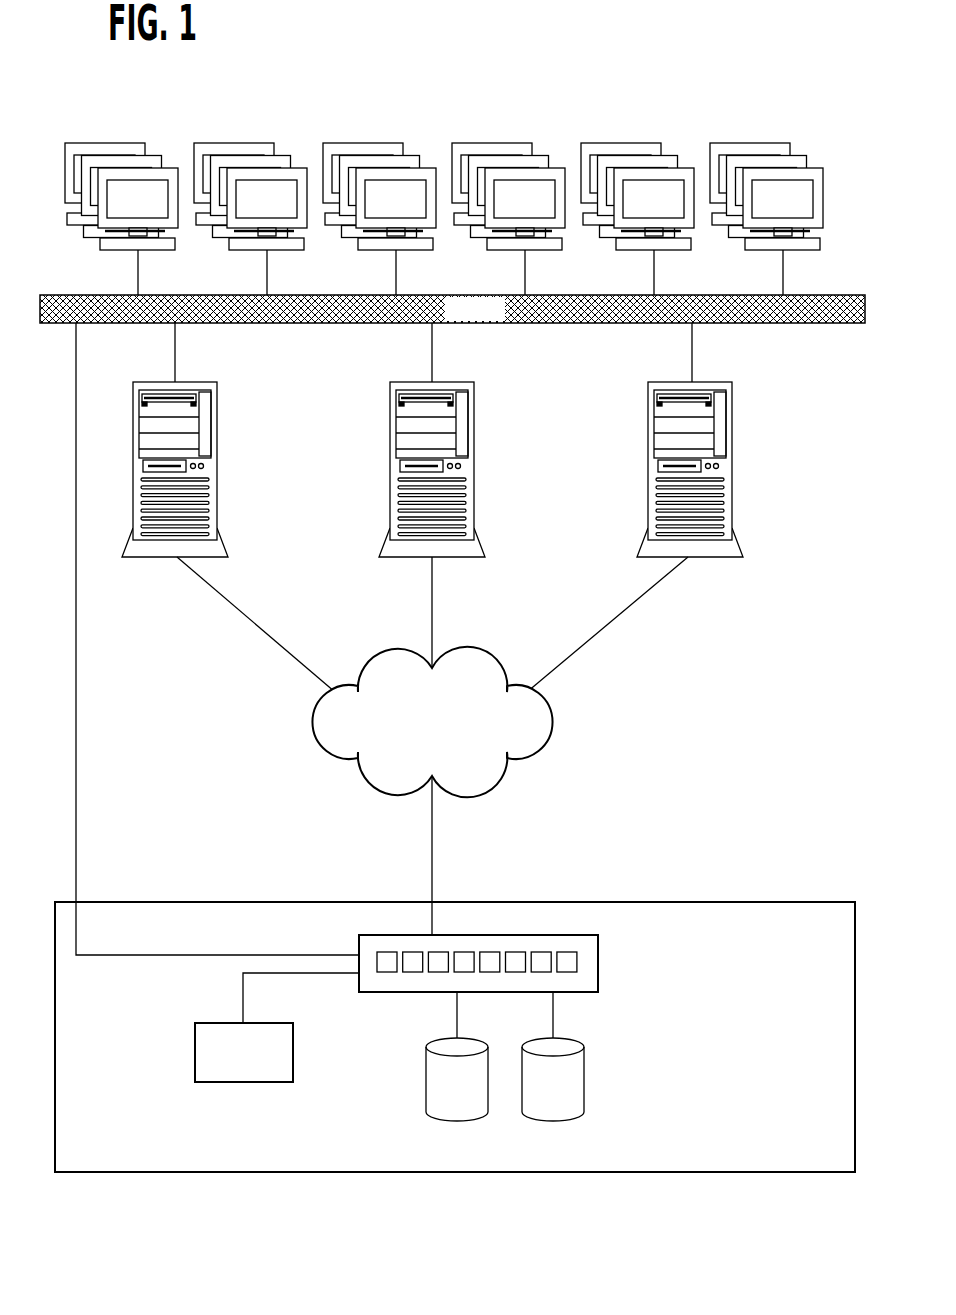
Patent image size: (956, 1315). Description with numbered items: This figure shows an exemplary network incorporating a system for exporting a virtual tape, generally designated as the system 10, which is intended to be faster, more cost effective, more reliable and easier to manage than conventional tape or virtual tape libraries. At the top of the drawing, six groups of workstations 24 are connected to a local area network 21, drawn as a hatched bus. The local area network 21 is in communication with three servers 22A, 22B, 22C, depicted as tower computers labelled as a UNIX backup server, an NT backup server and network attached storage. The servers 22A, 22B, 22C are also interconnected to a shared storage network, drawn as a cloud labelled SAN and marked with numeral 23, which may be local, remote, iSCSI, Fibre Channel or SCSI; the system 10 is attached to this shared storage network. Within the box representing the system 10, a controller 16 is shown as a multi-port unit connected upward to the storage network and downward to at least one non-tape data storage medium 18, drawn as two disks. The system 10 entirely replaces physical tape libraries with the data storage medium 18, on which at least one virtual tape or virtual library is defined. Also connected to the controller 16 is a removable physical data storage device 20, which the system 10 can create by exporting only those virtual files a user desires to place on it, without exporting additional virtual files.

The system for exporting a virtual tape 10 is at (665, 985).
The controller 16 is at (598, 953).
The non-tape data storage medium 18 is at (585, 1095).
The removable physical data storage device 20 is at (258, 1068).
The local area network 21 is at (805, 295).
The server 22A is at (210, 467).
The server 22B is at (468, 465).
The server 22C is at (727, 465).
The SAN 23 is at (537, 730).
The workstations 24 is at (247, 145).